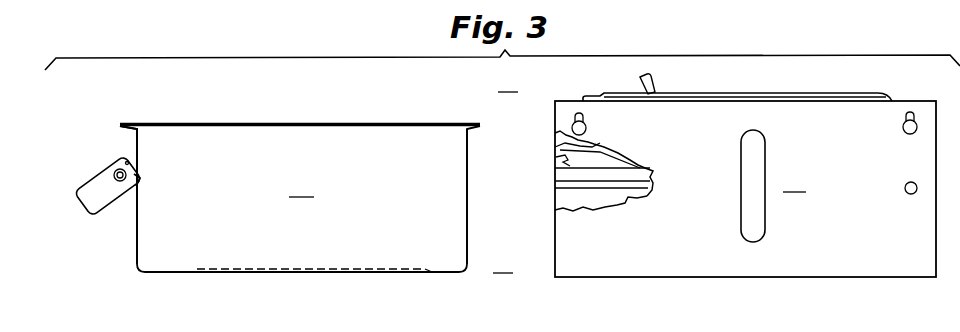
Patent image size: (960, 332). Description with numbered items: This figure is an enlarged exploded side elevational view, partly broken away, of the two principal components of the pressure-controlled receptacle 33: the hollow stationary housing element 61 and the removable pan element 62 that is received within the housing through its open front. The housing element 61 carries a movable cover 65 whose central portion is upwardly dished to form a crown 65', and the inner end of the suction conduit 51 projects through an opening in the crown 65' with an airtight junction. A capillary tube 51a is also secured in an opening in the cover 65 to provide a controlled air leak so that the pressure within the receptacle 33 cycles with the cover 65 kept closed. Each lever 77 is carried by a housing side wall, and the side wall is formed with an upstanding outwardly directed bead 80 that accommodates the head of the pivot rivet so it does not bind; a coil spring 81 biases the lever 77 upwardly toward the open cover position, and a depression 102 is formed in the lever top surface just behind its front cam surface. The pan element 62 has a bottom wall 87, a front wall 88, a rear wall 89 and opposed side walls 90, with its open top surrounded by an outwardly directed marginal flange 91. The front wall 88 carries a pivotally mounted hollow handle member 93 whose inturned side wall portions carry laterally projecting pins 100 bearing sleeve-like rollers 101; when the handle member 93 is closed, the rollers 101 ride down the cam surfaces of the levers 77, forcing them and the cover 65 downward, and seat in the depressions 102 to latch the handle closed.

The pressure-controlled receptacle 33 is at (505, 172).
The suction conduit 51 is at (640, 84).
The capillary tube 51a is at (596, 100).
The housing element 61 is at (745, 189).
The pan element 62 is at (300, 199).
The cover 65 is at (745, 81).
The crown 65' is at (737, 83).
The lever 77 is at (627, 182).
The bead 80 is at (757, 226).
The coil spring 81 is at (590, 147).
The bottom wall 87 is at (185, 263).
The front wall 88 is at (137, 243).
The rear wall 89 is at (468, 212).
The side wall 90 is at (333, 133).
The marginal flange 91 is at (137, 128).
The handle member 93 is at (86, 184).
The pin 100 is at (125, 162).
The roller 101 is at (135, 182).
The depression 102 is at (565, 163).